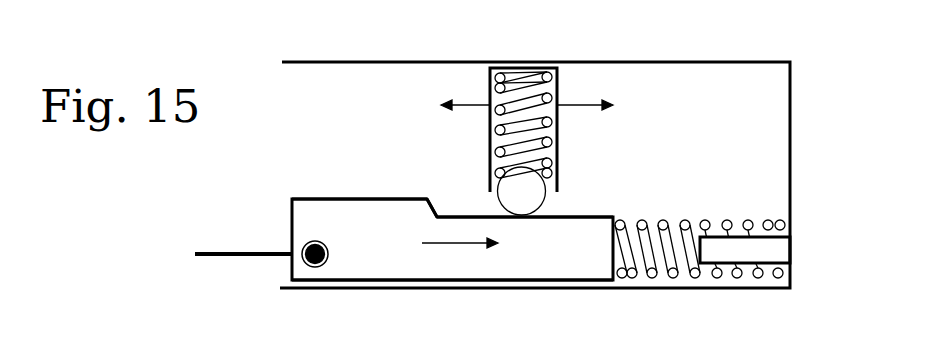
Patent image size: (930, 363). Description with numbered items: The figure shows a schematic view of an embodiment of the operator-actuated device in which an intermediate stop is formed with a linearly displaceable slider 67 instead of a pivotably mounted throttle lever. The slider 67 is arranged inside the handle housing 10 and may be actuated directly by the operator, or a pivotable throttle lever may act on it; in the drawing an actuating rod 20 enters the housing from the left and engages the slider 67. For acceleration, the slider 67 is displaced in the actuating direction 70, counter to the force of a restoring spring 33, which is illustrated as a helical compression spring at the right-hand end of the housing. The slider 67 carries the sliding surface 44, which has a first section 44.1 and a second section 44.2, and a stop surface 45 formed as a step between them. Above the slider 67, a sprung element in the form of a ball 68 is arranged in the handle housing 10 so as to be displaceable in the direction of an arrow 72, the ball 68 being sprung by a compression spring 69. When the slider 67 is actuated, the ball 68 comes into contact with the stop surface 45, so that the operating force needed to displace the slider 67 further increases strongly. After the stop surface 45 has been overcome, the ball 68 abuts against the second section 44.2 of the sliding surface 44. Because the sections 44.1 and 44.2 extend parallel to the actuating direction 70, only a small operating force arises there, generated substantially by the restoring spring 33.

The handle housing 10 is at (752, 62).
The actuating rod 20 is at (238, 257).
The restoring spring 33 is at (672, 272).
The sliding surface 44 is at (316, 199).
The first section of the sliding surface 44.1 is at (577, 215).
The second section of the sliding surface 44.2 is at (400, 199).
The stop surface 45 is at (432, 204).
The slider 67 is at (400, 266).
The ball 68 is at (527, 200).
The compression spring 69 is at (527, 103).
The actuating direction 70 is at (455, 246).
The arrow 72 is at (580, 103).